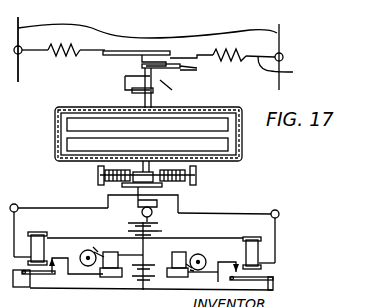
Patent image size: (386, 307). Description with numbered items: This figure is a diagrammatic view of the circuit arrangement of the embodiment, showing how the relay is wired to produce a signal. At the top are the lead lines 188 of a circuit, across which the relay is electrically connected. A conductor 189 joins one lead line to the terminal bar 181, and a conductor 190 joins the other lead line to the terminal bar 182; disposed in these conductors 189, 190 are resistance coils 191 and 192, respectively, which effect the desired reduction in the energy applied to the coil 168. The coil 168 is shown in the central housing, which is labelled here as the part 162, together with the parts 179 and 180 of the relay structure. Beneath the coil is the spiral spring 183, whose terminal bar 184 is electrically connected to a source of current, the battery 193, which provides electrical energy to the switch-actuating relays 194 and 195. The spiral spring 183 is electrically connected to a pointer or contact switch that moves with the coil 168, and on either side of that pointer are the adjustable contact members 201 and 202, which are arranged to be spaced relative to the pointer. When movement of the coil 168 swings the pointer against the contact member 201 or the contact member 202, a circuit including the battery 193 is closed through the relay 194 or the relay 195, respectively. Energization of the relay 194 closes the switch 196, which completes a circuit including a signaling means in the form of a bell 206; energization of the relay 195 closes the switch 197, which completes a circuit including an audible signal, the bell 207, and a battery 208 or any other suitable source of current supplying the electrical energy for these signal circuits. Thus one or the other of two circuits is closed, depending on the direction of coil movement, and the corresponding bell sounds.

The casing 162 is at (60, 140).
The coil 168 is at (241, 150).
The link 179 is at (172, 91).
The bracket 180 is at (132, 89).
The terminal bar 181 is at (140, 62).
The terminal bar 182 is at (160, 72).
The spiral spring 183 is at (162, 185).
The terminal bar 184 is at (123, 185).
The lead lines 188 is at (147, 29).
The conductor 189 is at (90, 62).
The conductor 190 is at (293, 71).
The resistance coil 191 is at (103, 55).
The resistance coil 192 is at (242, 61).
The battery 193 is at (160, 231).
The switch-actuating relay 194 is at (45, 250).
The switch-actuating relay 195 is at (258, 250).
The switch 196 is at (26, 277).
The switch 197 is at (272, 283).
The adjustable contact member 201 is at (100, 175).
The adjustable contact member 202 is at (196, 176).
The bell 206 is at (84, 241).
The bell 207 is at (198, 254).
The battery 208 is at (135, 280).